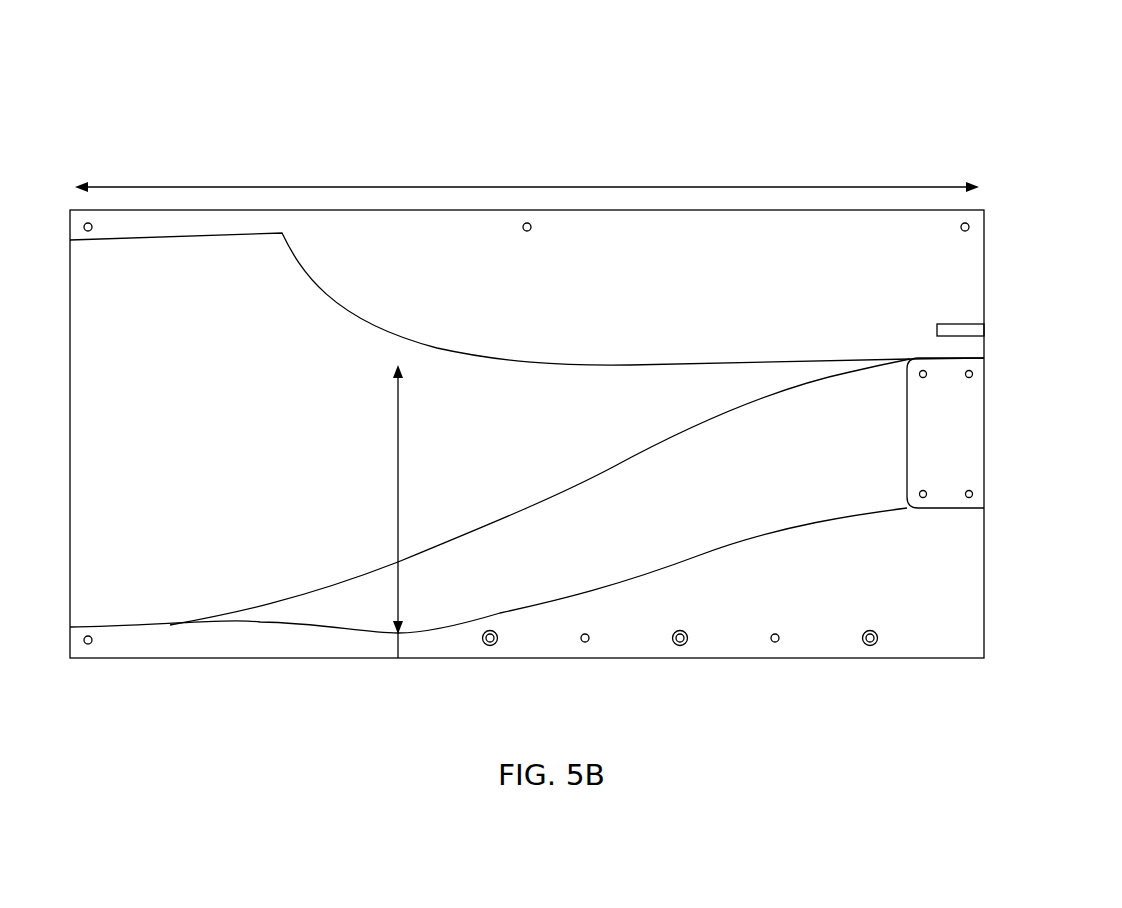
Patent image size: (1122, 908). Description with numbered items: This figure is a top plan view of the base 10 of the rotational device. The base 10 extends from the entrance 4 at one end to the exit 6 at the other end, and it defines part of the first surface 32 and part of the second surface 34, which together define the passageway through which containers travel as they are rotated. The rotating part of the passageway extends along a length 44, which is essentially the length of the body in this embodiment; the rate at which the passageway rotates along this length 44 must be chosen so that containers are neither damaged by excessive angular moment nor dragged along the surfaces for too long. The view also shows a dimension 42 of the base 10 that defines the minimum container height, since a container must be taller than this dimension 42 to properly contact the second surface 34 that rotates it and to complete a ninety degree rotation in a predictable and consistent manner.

The base 10 is at (674, 96).
The entrance 4 is at (70, 482).
The exit 6 is at (982, 413).
The first surface 32 is at (840, 493).
The second surface 34 is at (256, 344).
The dimension 42 is at (388, 504).
The length 44 is at (365, 186).